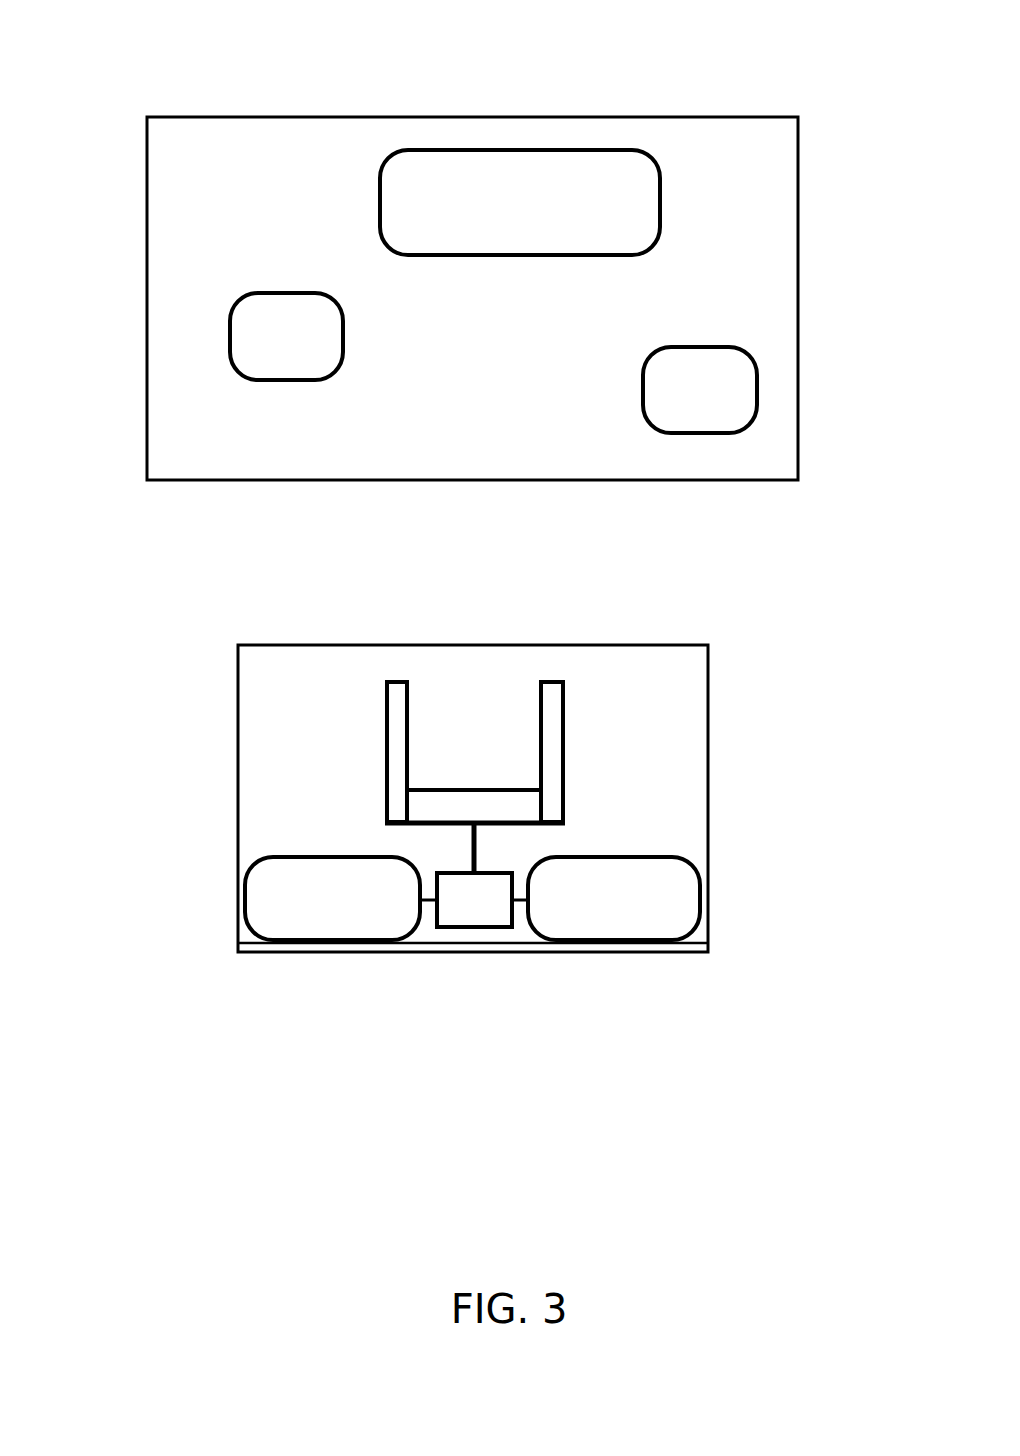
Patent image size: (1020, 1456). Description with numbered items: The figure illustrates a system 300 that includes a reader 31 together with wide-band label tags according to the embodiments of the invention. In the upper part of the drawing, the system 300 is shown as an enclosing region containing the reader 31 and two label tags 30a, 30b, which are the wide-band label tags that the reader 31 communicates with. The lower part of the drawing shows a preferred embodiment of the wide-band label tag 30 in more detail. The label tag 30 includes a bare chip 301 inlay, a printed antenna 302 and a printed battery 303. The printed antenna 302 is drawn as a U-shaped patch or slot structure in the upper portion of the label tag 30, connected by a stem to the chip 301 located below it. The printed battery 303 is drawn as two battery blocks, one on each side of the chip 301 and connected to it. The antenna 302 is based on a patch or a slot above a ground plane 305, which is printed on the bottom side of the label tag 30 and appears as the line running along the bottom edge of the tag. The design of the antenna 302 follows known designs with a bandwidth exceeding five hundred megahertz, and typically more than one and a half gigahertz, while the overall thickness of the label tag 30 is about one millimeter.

The system 300 is at (182, 135).
The reader 31 is at (560, 168).
The label tag 30a is at (248, 352).
The label tag 30b is at (730, 389).
The wide-band label tag 30 is at (268, 775).
The printed antenna 302 is at (385, 700).
The bare chip 301 is at (470, 927).
The printed battery 303 is at (313, 945).
The ground plane 305 is at (268, 955).